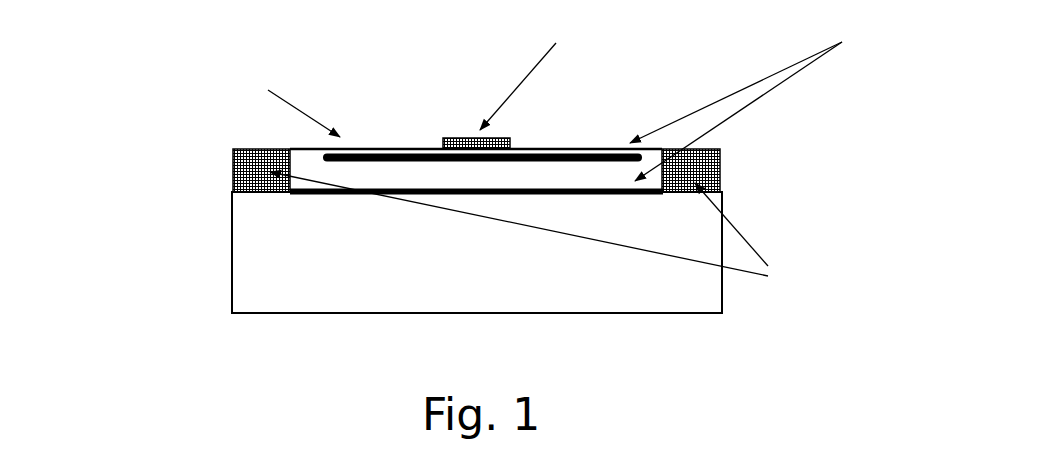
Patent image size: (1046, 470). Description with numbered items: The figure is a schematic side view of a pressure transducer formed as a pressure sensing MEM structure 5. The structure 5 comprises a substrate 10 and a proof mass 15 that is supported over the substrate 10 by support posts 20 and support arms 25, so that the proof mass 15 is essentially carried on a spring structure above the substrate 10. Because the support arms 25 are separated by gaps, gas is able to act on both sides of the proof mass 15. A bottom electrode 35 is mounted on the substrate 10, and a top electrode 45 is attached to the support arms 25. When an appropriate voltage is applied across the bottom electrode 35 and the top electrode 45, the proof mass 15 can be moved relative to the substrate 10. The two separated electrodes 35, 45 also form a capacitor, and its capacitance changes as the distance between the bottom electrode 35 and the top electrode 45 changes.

The pressure sensing MEM structure 5 is at (150, 228).
The substrate 10 is at (232, 288).
The proof mass 15 is at (506, 130).
The support posts 20 is at (248, 168).
The support arms 25 is at (365, 149).
The bottom electrode 35 is at (644, 197).
The top electrode 45 is at (422, 164).